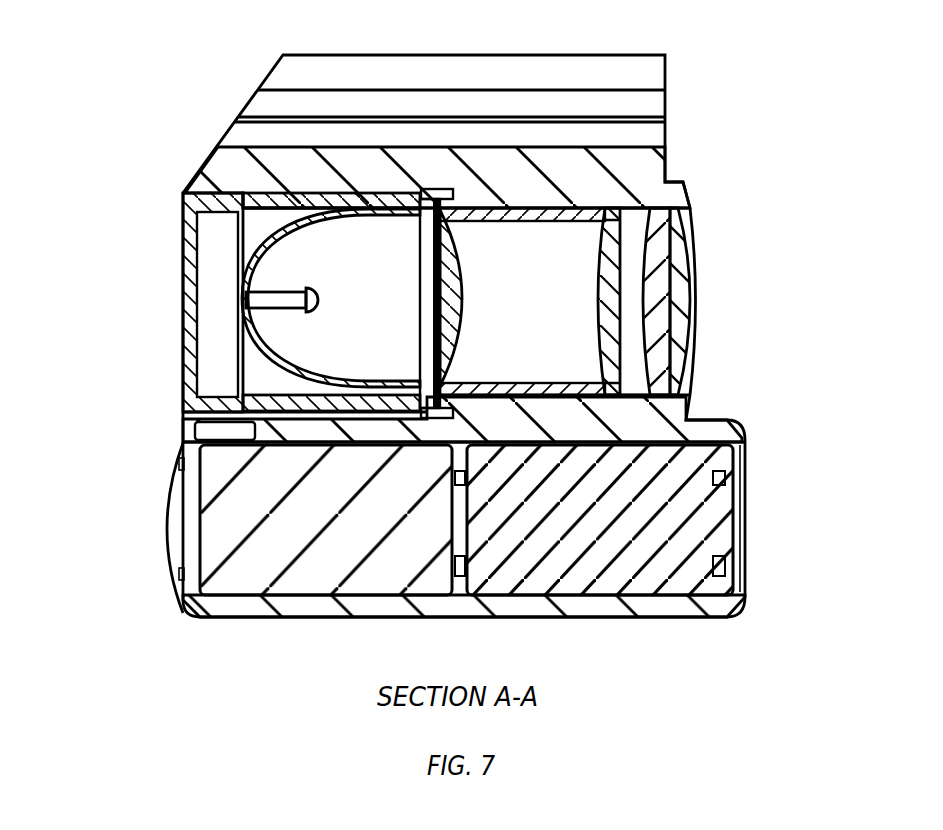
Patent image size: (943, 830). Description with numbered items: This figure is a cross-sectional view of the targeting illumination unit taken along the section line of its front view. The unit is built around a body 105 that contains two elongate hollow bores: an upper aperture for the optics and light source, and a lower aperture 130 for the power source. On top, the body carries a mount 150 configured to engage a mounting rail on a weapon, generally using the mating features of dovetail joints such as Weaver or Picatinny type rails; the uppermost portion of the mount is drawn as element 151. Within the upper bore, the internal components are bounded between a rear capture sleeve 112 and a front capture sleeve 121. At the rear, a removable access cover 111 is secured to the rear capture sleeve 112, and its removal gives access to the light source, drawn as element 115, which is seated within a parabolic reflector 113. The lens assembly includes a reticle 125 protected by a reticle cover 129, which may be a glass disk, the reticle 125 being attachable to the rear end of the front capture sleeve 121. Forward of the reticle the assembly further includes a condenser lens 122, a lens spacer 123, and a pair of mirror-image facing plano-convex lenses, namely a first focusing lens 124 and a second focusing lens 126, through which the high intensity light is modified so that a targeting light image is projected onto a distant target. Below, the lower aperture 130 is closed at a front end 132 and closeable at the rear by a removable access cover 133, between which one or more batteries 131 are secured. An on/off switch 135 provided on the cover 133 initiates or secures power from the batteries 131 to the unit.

The body 105 is at (710, 432).
The removable access cover 111 is at (182, 294).
The rear capture sleeve 112 is at (283, 210).
The parabolic reflector 113 is at (260, 252).
The light source / LED 115 is at (312, 312).
The front capture sleeve 121 is at (555, 205).
The condenser lens 122 is at (605, 298).
The lens spacer 123 is at (660, 210).
The first focusing lens 124 is at (662, 302).
The reticle 125 is at (443, 277).
The second focusing lens 126 is at (680, 247).
The reticle cover 129 is at (418, 230).
The lower aperture 130 is at (148, 549).
The batteries 131 is at (580, 523).
The front end 132 is at (750, 575).
The removable access cover 133 is at (180, 580).
The on/off switch 135 is at (167, 518).
The mount 150 is at (672, 70).
The top cover plate 151 is at (525, 63).